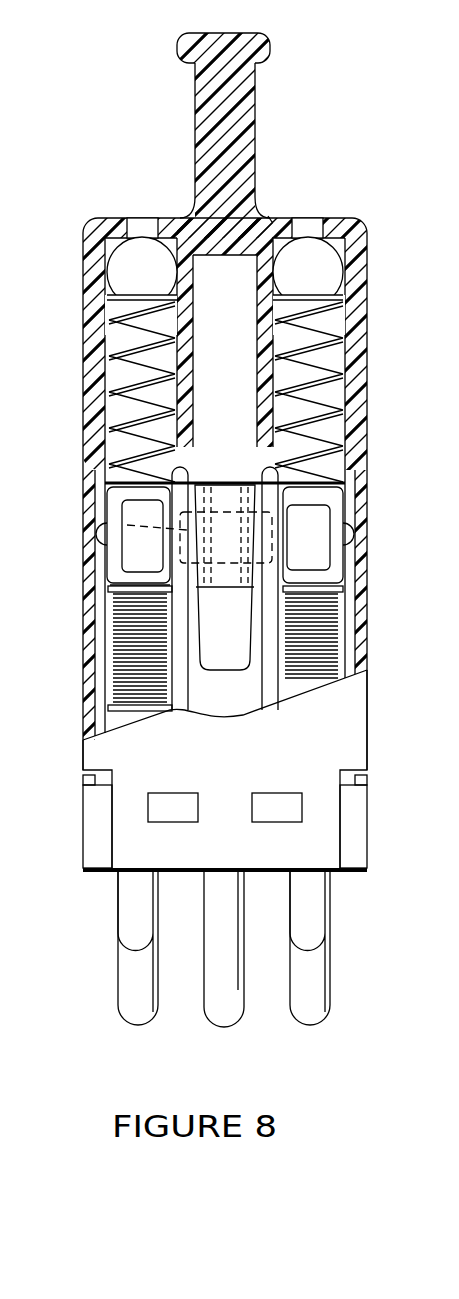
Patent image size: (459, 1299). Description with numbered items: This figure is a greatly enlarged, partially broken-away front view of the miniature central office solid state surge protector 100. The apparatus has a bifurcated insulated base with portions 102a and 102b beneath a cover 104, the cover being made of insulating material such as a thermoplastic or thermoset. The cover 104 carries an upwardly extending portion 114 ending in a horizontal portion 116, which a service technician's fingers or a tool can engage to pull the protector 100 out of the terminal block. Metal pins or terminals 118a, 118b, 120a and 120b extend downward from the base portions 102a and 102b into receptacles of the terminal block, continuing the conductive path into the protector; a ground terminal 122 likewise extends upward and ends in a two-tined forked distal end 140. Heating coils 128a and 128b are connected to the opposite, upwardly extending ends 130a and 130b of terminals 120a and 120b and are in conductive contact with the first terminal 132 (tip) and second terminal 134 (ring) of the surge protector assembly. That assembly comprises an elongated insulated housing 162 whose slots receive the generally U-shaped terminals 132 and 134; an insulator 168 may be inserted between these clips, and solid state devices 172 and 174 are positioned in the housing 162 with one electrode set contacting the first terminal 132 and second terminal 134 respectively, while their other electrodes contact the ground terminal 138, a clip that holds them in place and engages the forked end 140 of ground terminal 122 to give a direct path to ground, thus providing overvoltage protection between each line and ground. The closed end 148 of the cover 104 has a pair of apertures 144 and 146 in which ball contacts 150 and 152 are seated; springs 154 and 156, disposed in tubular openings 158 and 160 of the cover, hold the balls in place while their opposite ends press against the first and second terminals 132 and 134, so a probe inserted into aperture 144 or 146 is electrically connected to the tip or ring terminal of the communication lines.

The miniature central office solid state surge protector 100 is at (373, 354).
The base portion 102a is at (95, 853).
The base portion 102b is at (358, 834).
The cover 104 is at (357, 226).
The upwardly extending portion 114 is at (255, 128).
The horizontal portion 116 is at (238, 33).
The terminal 118a is at (133, 938).
The terminal 118b is at (320, 917).
The terminal 120a is at (135, 1012).
The terminal 120b is at (317, 1002).
The ground terminal 122 is at (227, 1017).
The heating coil 128a is at (115, 668).
The heating coil 128b is at (333, 638).
The opposite end of terminal 130a is at (110, 588).
The opposite end of terminal 130b is at (343, 597).
The first terminal 132 is at (107, 492).
The second terminal 134 is at (345, 493).
The ground terminal 138 is at (122, 509).
The forked shaped distal end 140 is at (110, 585).
The aperture 144 is at (133, 219).
The aperture 146 is at (315, 222).
The closed end 148 is at (270, 220).
The ball contact 150 is at (122, 262).
The ball contact 152 is at (337, 278).
The spring 154 is at (107, 353).
The spring 156 is at (345, 393).
The tubular opening 158 is at (112, 388).
The tubular opening 160 is at (340, 417).
The insulated housing 162 is at (343, 508).
The insulator 168 is at (223, 517).
The solid state device 172 is at (113, 523).
The solid state device 174 is at (272, 537).